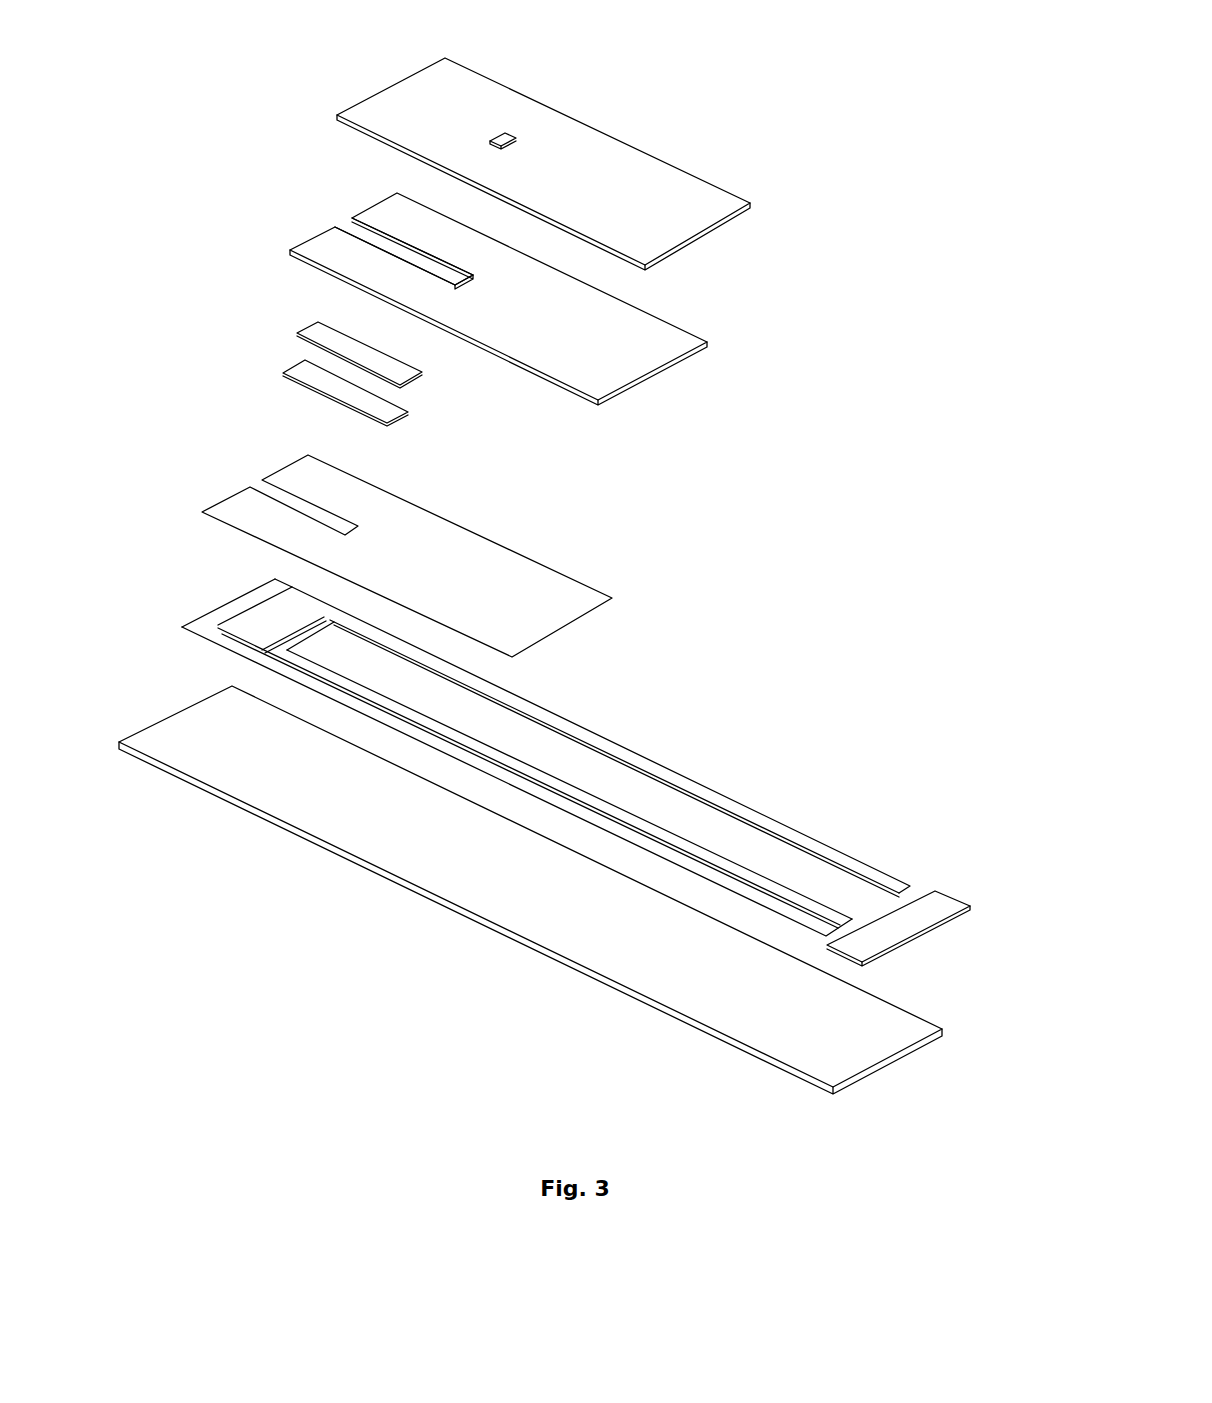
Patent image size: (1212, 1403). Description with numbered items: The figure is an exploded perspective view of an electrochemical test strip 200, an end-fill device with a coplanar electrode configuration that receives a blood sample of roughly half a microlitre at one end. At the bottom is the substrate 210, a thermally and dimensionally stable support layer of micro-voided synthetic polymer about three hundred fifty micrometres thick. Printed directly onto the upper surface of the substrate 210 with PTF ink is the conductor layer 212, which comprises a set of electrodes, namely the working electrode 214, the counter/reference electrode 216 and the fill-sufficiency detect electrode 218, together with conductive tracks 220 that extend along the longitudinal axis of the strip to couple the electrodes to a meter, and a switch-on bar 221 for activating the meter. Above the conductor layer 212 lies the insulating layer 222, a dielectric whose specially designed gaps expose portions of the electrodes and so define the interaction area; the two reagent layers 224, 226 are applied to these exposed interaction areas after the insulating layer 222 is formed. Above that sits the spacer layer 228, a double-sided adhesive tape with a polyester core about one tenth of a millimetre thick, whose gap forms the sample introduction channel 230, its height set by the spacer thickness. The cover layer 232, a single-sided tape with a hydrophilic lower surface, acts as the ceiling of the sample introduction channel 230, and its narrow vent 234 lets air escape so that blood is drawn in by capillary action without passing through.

The electrochemical test strip 200 is at (933, 513).
The substrate 210 is at (540, 910).
The conductor layer 212 is at (318, 690).
The working electrode 214 is at (245, 597).
The counter/reference electrode 216 is at (278, 625).
The fill-sufficiency detect electrode 218 is at (308, 637).
The conductive tracks 220 is at (543, 793).
The switch-on bar 221 is at (925, 910).
The insulating layer 222 is at (448, 568).
The reagent layer 224 is at (315, 375).
The reagent layer 226 is at (335, 335).
The spacer layer 228 is at (572, 302).
The sample introduction channel 230 is at (352, 220).
The cover layer 232 is at (585, 188).
The vent 234 is at (515, 139).